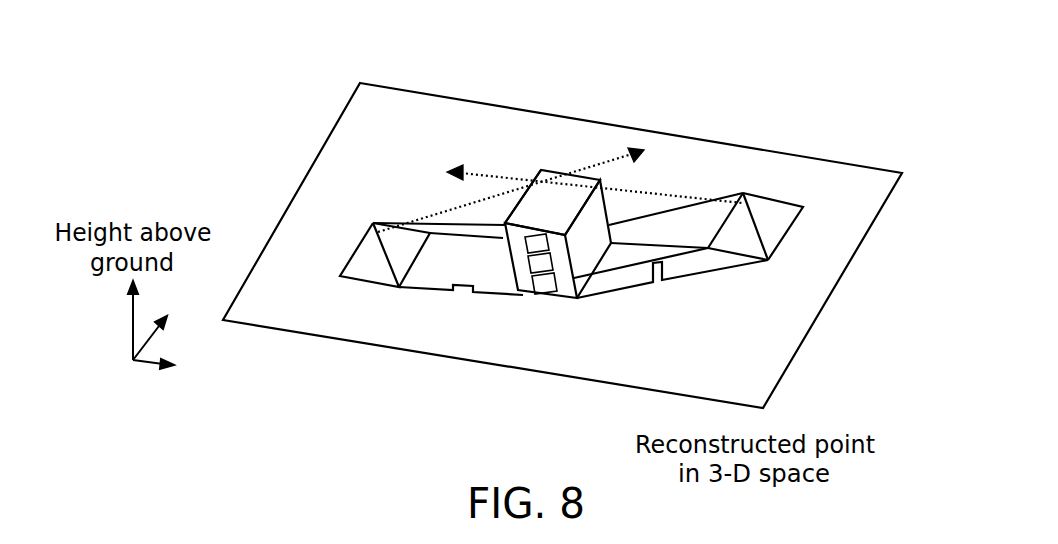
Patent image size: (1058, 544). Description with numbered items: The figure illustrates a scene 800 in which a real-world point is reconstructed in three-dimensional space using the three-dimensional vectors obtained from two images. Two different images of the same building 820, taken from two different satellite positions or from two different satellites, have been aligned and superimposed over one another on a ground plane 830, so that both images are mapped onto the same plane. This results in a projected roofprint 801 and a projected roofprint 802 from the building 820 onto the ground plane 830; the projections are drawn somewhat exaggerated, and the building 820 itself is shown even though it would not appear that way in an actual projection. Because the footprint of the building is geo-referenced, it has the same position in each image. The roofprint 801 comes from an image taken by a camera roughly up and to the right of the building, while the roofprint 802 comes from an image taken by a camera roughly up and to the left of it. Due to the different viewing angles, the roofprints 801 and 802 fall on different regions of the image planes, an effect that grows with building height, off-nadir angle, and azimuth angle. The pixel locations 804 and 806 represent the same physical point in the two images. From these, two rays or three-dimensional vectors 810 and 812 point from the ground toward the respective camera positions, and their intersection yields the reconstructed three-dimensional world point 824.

The reconstructed 3-D building model 800 is at (856, 53).
The projected roofprint 801 is at (373, 272).
The projected roofprint 802 is at (773, 232).
The pixel location 804 is at (373, 230).
The pixel location 806 is at (750, 197).
The 3-D vector 810 is at (433, 212).
The 3-D vector 812 is at (649, 192).
The building 820 is at (567, 297).
The 3-D world point 824 is at (545, 170).
The ground plane 830 is at (746, 364).